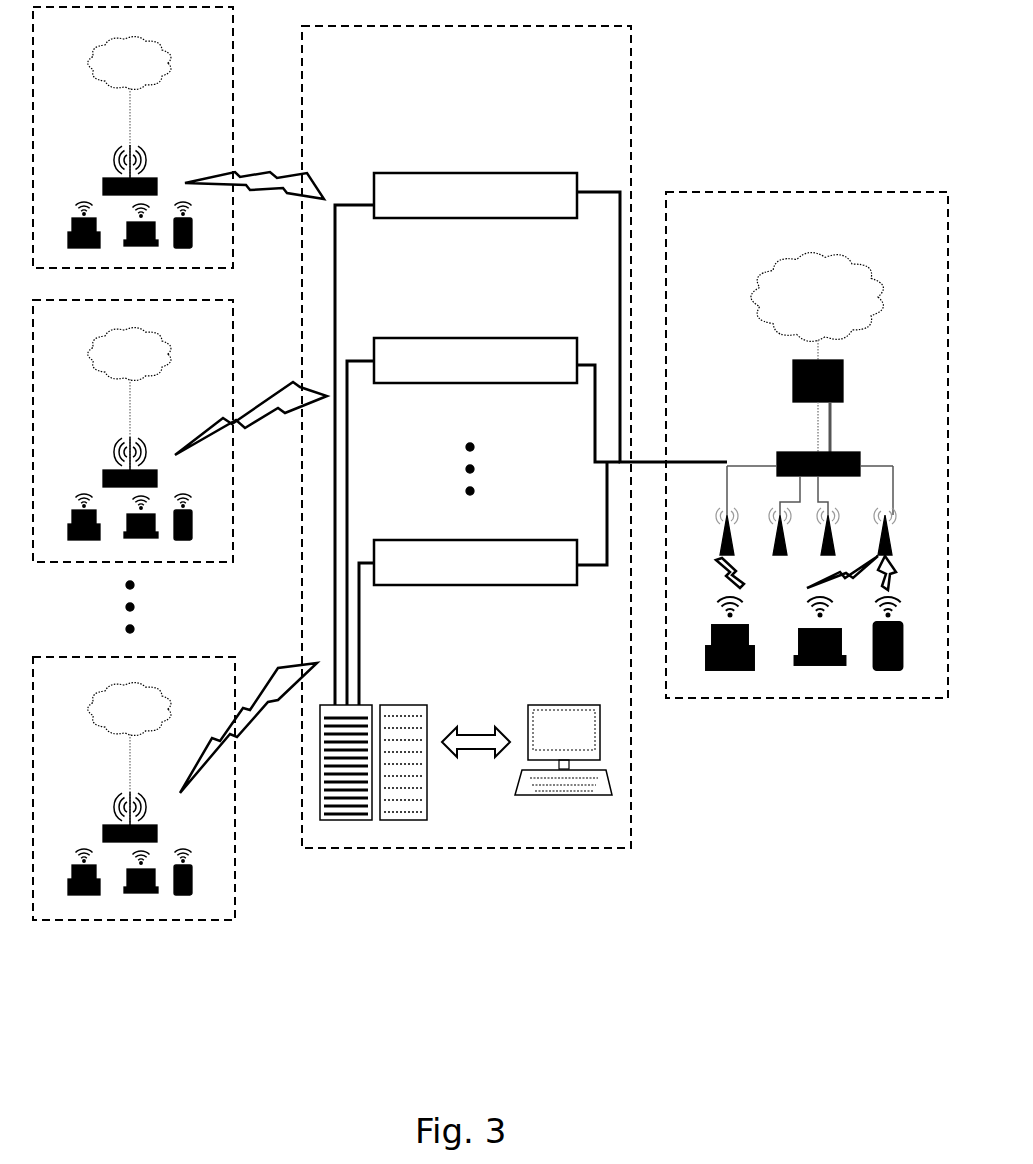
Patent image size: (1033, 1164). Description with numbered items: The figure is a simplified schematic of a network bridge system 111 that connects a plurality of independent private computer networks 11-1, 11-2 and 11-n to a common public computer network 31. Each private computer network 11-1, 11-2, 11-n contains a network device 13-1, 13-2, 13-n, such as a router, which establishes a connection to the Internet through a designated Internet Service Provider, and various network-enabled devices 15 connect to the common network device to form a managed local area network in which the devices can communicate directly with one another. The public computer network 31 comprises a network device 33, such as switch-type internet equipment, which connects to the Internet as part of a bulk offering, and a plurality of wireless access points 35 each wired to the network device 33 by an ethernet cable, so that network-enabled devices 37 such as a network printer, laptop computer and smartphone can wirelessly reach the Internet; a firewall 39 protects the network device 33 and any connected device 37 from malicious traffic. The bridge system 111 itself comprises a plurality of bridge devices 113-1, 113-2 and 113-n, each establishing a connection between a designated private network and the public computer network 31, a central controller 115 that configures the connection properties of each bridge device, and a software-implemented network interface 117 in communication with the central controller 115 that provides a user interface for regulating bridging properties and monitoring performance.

The private computer network 11-1 is at (222, 36).
The private computer network 11-2 is at (222, 327).
The private computer network 11-n is at (229, 682).
The network device 13-1 is at (103, 183).
The network device 13-2 is at (103, 475).
The network device 13-n is at (103, 828).
The network-enabled devices 15 is at (75, 540).
The network bridge system 111 is at (592, 65).
The bridge device 113-1 is at (555, 207).
The bridge device 113-2 is at (555, 372).
The bridge device 113-n is at (555, 574).
The central controller 115 is at (428, 785).
The network interface 117 is at (580, 740).
The public computer network 31 is at (890, 229).
The network device 33 is at (790, 452).
The wireless access points 35 is at (725, 540).
The network-enabled devices 37 is at (815, 663).
The firewall 39 is at (838, 372).